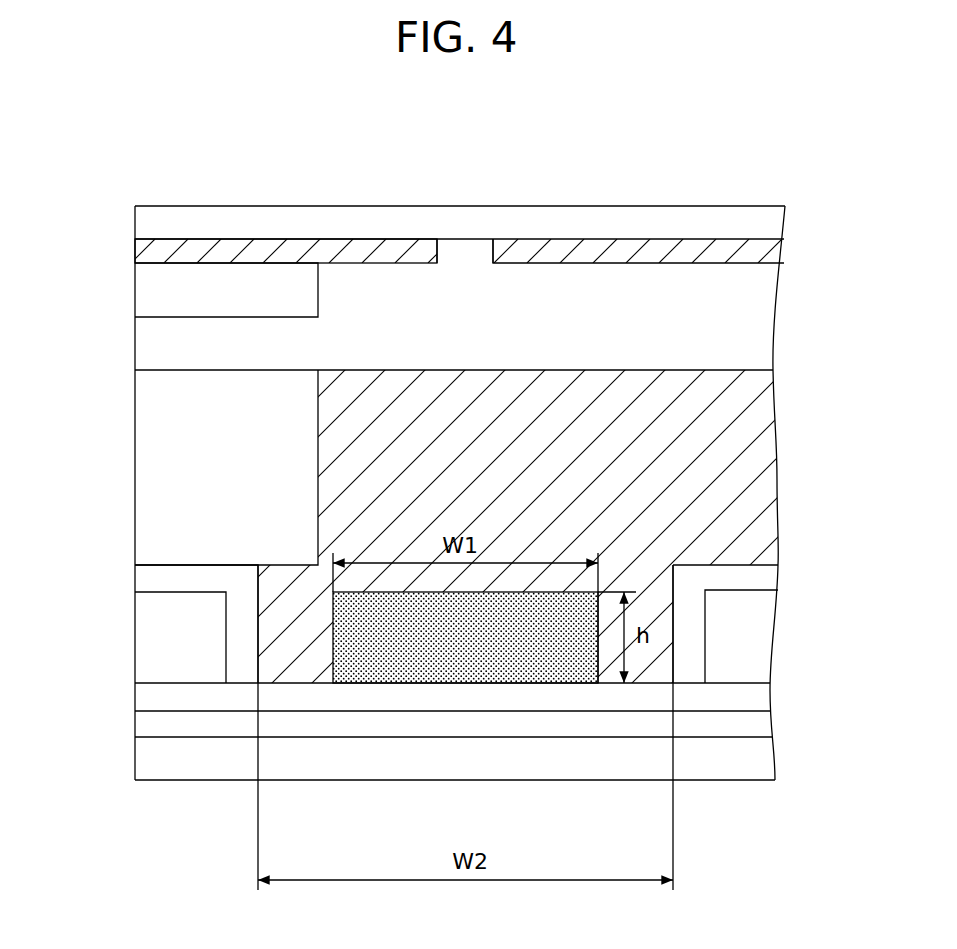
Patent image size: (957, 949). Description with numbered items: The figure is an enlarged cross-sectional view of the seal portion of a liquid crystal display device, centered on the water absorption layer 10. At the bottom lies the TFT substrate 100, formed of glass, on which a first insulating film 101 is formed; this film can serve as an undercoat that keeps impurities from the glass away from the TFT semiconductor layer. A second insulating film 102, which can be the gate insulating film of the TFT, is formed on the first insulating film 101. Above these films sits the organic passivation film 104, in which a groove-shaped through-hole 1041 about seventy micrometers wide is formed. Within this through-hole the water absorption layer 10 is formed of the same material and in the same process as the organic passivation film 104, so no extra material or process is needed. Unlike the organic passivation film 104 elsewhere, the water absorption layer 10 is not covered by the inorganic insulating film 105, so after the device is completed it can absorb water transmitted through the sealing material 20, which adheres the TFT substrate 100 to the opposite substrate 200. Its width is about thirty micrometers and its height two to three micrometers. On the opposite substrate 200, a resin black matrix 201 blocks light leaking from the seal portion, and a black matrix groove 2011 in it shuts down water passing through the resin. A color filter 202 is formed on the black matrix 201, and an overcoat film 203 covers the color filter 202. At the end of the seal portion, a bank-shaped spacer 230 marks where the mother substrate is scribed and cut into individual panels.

The opposite substrate 200 is at (740, 228).
The black matrix 201 is at (602, 250).
The black matrix groove 2011 is at (472, 248).
The color filter 202 is at (250, 293).
The overcoat film 203 is at (742, 288).
The bank-shaped spacer 230 is at (190, 408).
The sealing material 20 is at (740, 482).
The inorganic insulating film 105 is at (160, 582).
The organic passivation film 104 is at (165, 645).
The groove-shaped through-hole 1041 is at (648, 660).
The water absorption layer 10 is at (525, 653).
The second insulating film 102 is at (417, 700).
The first insulating film 101 is at (335, 723).
The TFT substrate 100 is at (203, 760).